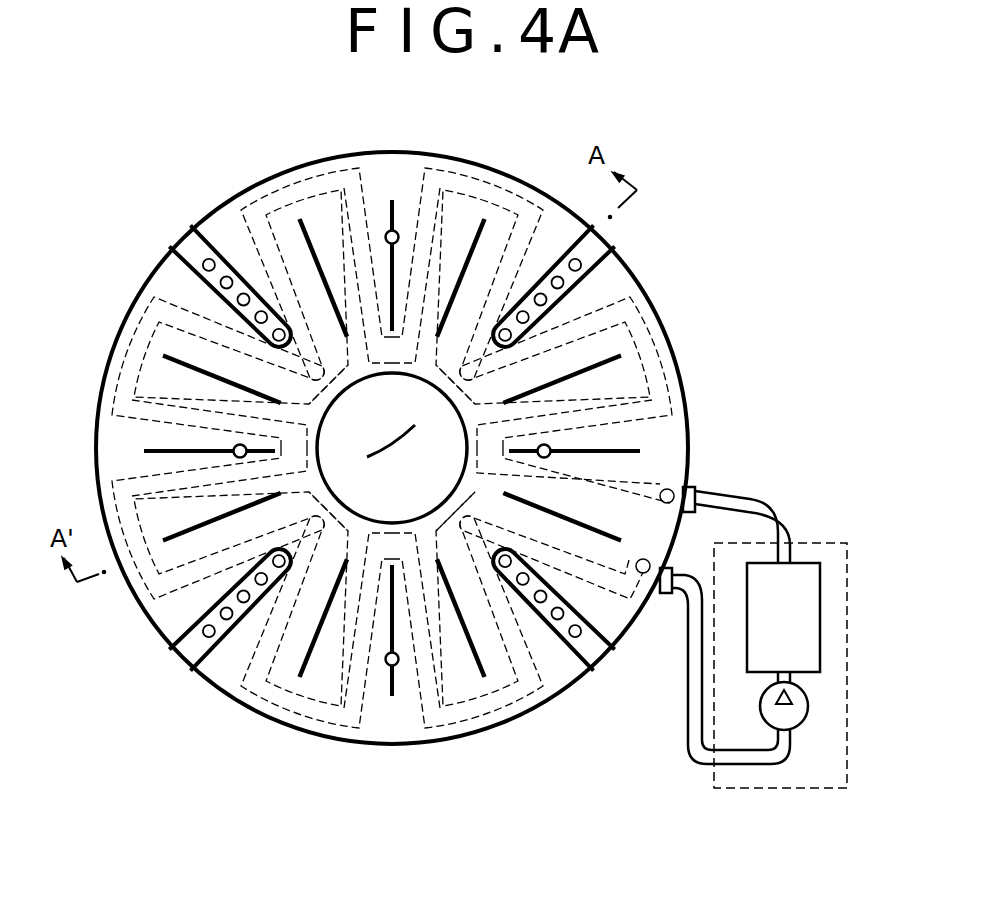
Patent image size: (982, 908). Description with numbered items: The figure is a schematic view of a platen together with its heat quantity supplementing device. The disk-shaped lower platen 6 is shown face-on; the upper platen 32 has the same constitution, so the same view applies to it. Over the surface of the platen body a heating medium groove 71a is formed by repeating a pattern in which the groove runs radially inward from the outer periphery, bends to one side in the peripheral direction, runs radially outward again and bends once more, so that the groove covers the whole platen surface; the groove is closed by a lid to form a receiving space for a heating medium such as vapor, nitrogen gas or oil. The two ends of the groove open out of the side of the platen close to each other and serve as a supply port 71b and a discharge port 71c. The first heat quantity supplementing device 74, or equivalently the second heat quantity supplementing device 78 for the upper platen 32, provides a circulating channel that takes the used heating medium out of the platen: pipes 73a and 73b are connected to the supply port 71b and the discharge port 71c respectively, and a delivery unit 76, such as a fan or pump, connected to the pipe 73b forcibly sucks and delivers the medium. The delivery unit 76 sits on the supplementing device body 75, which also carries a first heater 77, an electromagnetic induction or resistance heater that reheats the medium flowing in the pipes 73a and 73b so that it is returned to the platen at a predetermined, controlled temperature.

The upper platen 32 is at (451, 448).
The lower platen 6 is at (687, 367).
The heating medium groove 71a is at (673, 399).
The supply port 71b is at (683, 482).
The discharge port 71c is at (652, 595).
The pipe 73a is at (790, 517).
The pipe 73b is at (688, 724).
The first heat quantity supplementing device 74 is at (800, 606).
The second heat quantity supplementing device 78 is at (766, 485).
The supplementing device body 75 is at (790, 792).
The delivery unit 76 is at (802, 722).
The first heater 77 is at (748, 640).